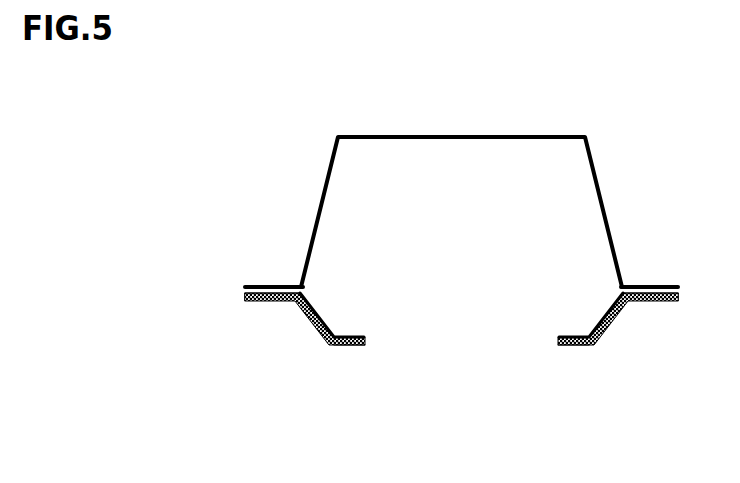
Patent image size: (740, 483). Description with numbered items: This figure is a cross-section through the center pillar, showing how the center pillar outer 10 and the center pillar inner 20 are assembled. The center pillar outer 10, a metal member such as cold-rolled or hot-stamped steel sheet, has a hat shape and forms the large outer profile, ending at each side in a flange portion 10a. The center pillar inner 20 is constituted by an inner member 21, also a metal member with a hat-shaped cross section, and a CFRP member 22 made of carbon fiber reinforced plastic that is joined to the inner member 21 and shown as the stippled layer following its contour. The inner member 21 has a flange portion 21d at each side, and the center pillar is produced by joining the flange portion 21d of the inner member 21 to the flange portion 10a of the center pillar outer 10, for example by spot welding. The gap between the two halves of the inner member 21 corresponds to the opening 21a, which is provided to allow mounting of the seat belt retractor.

The center pillar outer 10 is at (366, 129).
The flange portion 10a is at (277, 284).
The center pillar inner 20 is at (463, 366).
The inner member 21 is at (346, 331).
The opening 21a is at (365, 400).
The flange portion 21d is at (275, 303).
The CFRP member 22 is at (320, 334).